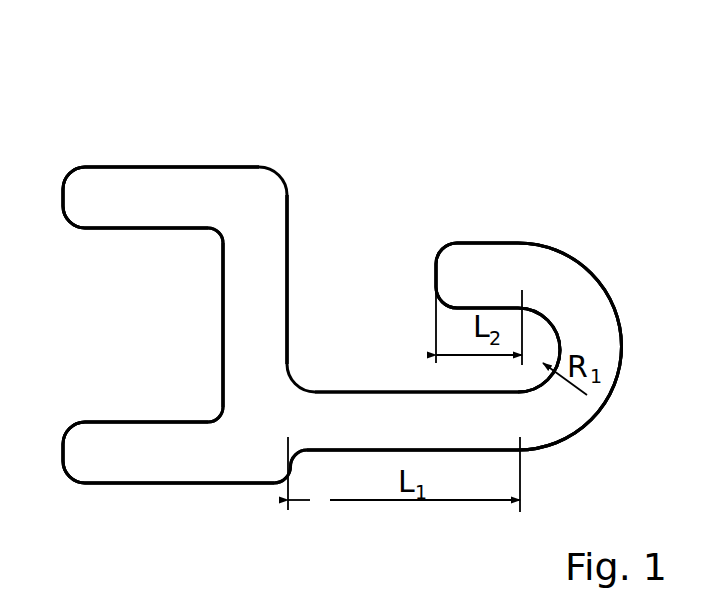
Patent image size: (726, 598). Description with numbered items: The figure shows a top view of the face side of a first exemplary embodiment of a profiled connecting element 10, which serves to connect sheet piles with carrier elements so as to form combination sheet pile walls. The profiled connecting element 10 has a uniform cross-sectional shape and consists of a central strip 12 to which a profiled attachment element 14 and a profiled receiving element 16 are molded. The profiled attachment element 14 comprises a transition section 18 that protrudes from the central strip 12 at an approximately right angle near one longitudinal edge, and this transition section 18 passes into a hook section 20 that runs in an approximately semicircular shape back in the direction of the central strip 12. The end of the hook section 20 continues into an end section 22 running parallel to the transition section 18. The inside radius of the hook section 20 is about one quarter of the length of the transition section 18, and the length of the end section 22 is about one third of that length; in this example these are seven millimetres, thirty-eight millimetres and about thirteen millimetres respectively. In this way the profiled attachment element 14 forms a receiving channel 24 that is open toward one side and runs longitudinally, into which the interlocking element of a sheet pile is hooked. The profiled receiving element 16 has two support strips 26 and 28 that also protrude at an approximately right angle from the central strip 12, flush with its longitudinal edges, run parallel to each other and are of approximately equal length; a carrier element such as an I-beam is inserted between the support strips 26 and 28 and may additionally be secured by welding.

The profiled connecting element 10 is at (493, 100).
The central strip 12 is at (248, 330).
The profiled attachment element 14 is at (572, 222).
The profiled receiving element 16 is at (88, 130).
The transition section 18 is at (368, 438).
The hook section 20 is at (603, 338).
The end section 22 is at (463, 275).
The receiving channel 24 is at (378, 361).
The support strip 26 is at (150, 447).
The support strip 28 is at (165, 188).